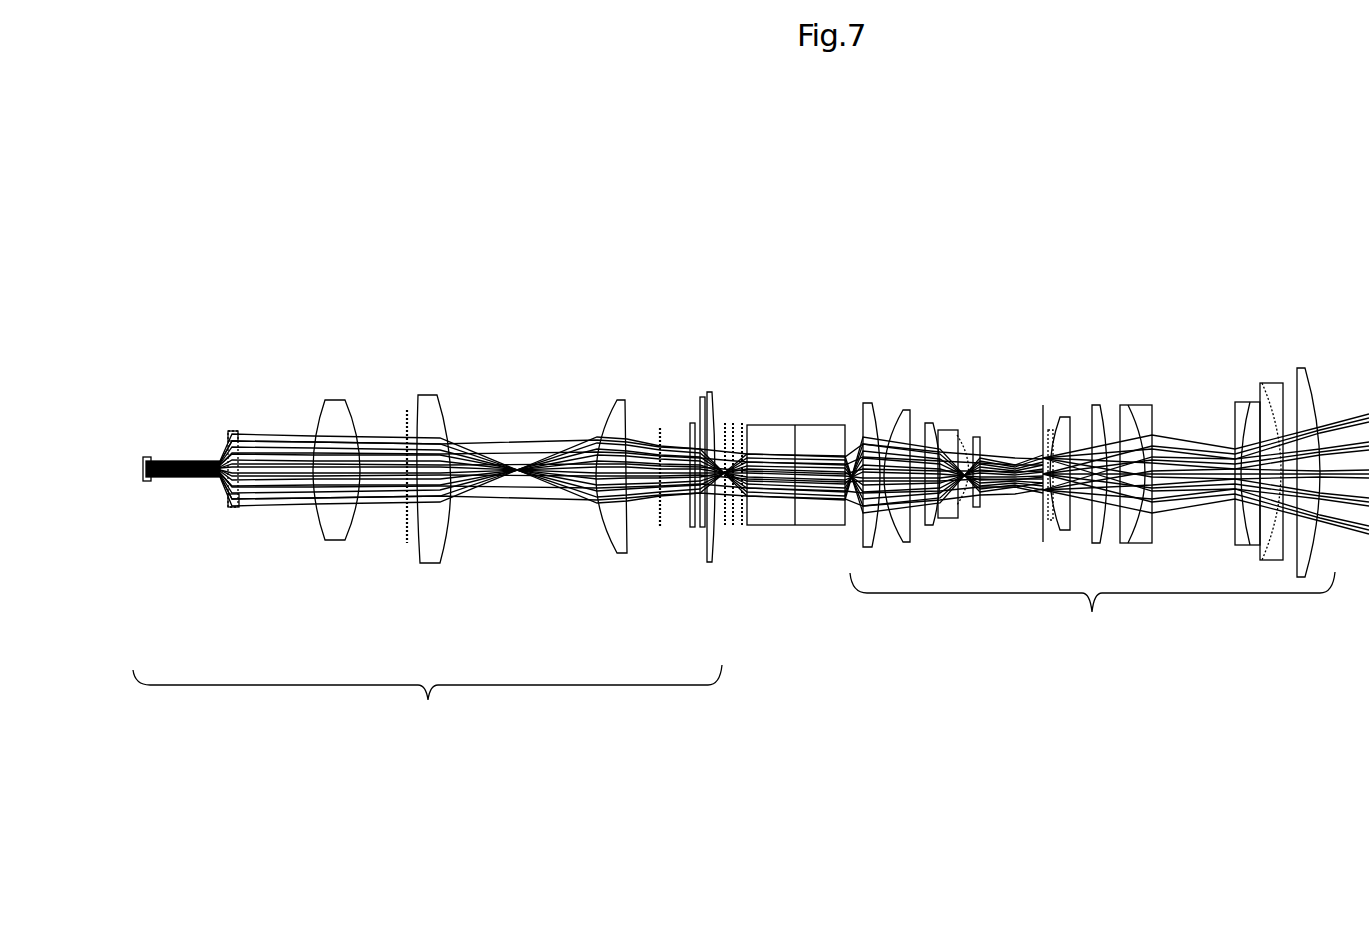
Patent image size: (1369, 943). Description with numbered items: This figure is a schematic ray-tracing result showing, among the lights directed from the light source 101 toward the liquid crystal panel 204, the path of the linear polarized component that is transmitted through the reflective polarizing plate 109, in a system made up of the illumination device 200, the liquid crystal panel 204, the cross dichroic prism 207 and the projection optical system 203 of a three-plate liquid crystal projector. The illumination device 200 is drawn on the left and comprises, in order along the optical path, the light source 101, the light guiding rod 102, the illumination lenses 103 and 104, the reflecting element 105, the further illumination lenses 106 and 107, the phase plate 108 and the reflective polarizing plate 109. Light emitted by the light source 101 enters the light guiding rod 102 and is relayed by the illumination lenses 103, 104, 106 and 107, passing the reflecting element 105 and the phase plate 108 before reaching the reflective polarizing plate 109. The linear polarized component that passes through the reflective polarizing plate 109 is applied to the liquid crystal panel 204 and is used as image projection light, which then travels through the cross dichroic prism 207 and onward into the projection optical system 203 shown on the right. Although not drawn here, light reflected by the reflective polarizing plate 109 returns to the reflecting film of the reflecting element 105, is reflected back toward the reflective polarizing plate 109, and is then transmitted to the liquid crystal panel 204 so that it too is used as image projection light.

The light source 101 is at (143, 481).
The light guiding rod 102 is at (183, 456).
The illumination lens 103 is at (233, 430).
The illumination lens 104 is at (337, 398).
The reflecting element 105 is at (407, 545).
The illumination lens 106 is at (427, 395).
The illumination lens 107 is at (620, 400).
The phase plate 108 is at (661, 528).
The reflective polarizing plate 109 is at (690, 424).
The illumination device 200 is at (424, 502).
The projection optical system 203 is at (1092, 511).
The liquid crystal panel 204 is at (717, 372).
The cross dichroic prism 207 is at (817, 422).